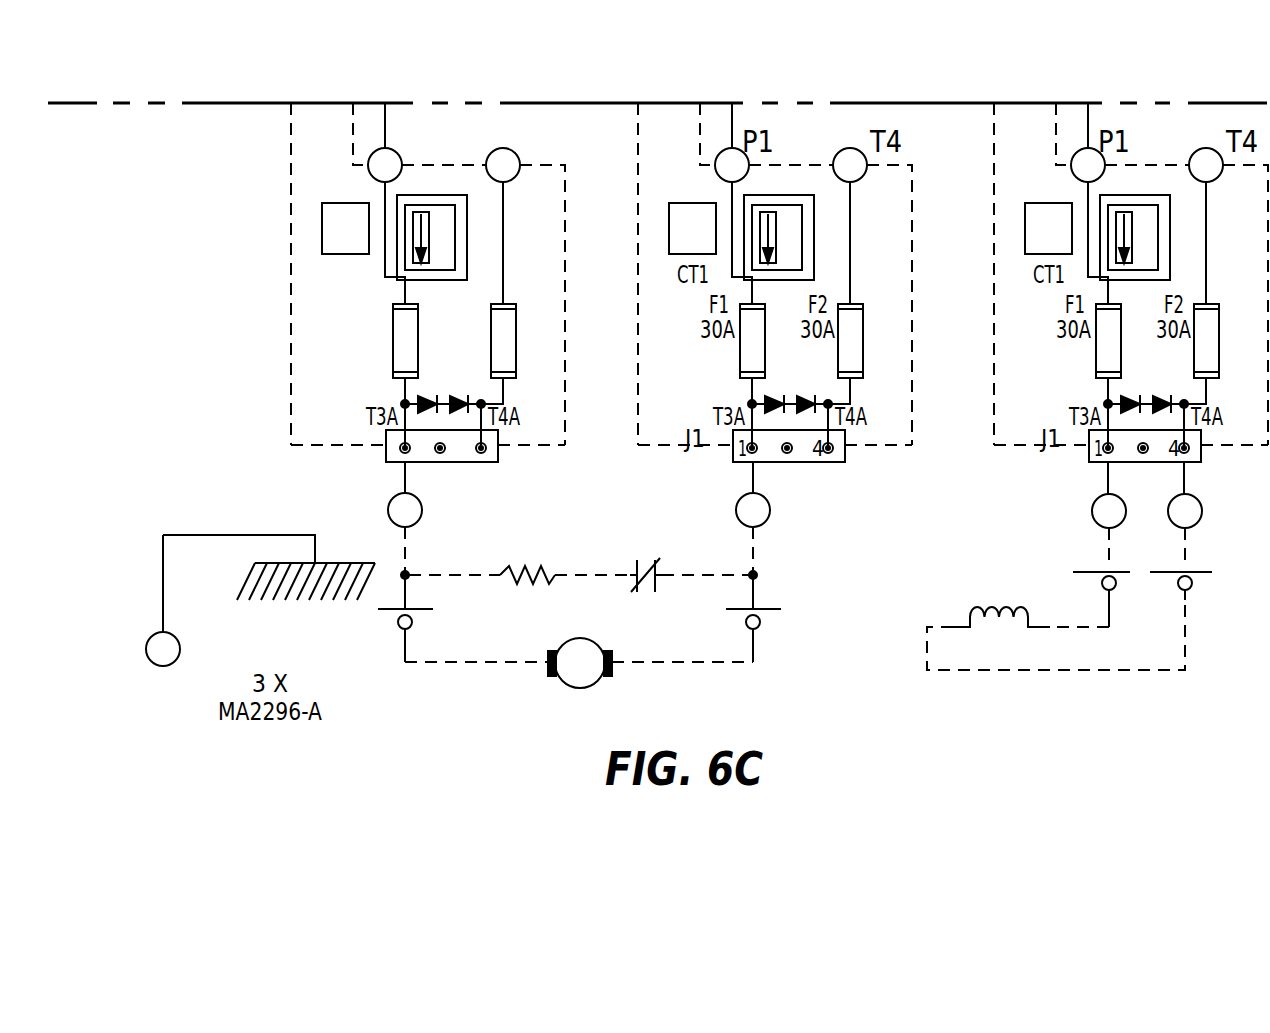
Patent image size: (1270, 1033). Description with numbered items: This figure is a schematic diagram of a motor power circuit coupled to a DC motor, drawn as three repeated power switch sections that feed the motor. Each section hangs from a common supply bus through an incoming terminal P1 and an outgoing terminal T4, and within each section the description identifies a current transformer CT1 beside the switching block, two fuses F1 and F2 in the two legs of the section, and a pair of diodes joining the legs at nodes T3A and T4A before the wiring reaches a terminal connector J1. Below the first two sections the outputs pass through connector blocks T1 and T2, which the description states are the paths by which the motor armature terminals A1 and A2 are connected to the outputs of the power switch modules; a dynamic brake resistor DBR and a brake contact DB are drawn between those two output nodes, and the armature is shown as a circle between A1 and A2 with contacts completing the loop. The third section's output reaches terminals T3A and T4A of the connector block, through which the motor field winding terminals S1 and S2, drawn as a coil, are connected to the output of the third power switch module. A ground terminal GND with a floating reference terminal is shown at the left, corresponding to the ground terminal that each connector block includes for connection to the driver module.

The power terminal P1 is at (397, 153).
The connector block T3/ T4 is at (520, 153).
The current transformer CT1 is at (345, 246).
The fuse F1 30A F1 is at (385, 334).
The fuse F2 30A F2 is at (484, 334).
The terminal T3A is at (1081, 501).
The terminal T4A is at (1212, 501).
The connector J1 is at (417, 443).
The connector block T1 is at (420, 502).
The connector block T2 is at (768, 502).
The dynamic brake resistor DBR is at (527, 557).
The dynamic brake contact DB is at (646, 561).
The motor armature terminal A1 is at (543, 651).
The motor armature terminal A2 is at (620, 651).
The ground terminal GND is at (260, 600).
The motor field winding terminal S1 is at (1000, 603).
The motor field winding terminal S2 is at (1041, 594).